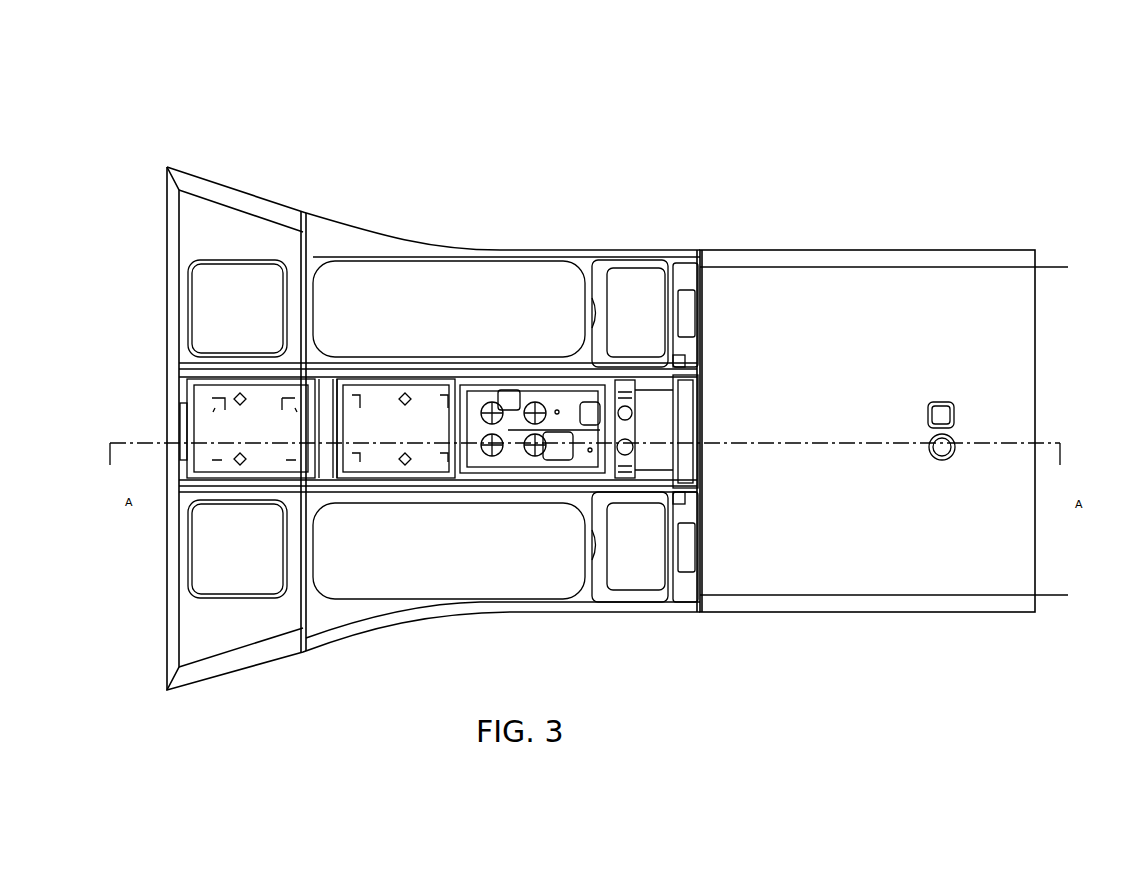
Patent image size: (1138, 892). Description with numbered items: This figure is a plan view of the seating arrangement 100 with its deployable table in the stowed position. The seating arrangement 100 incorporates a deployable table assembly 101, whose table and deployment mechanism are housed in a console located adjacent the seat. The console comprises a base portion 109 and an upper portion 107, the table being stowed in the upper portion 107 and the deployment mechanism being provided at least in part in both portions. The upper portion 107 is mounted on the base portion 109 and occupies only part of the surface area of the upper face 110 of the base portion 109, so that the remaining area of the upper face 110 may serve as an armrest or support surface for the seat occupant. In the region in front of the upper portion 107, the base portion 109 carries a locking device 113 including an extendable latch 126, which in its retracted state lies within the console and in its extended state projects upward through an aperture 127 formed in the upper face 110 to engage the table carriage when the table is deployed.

The seating arrangement 100 is at (434, 360).
The deployable table assembly 101 is at (540, 492).
The upper portion 107 is at (483, 249).
The base portion 109 is at (910, 250).
The upper face 110 is at (823, 292).
The locking device 113 is at (950, 402).
The extendable latch 126 is at (940, 460).
The aperture 127 is at (952, 436).